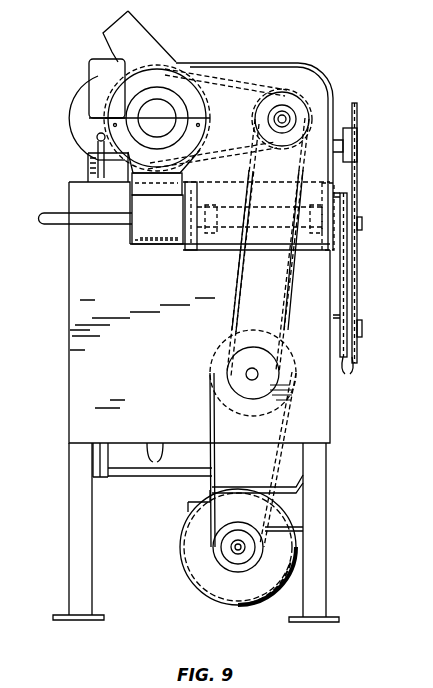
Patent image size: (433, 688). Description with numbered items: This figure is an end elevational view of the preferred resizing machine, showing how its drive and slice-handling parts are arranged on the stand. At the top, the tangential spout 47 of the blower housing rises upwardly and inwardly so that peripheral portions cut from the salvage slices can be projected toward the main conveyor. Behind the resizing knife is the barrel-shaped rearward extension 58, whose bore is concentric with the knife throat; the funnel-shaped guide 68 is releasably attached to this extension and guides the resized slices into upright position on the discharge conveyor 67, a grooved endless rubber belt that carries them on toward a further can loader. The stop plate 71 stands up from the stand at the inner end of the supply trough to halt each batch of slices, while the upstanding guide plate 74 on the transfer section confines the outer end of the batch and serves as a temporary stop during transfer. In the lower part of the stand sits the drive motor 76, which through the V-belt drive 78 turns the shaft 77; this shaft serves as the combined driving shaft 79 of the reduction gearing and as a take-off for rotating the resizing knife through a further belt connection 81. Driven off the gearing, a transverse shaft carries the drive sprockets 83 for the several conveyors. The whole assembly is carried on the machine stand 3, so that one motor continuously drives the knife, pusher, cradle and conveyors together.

The frame 3 is at (327, 512).
The tangential spout 47 is at (148, 27).
The barrel-shaped rearward extension 58 is at (186, 104).
The discharge conveyor 67 is at (158, 198).
The funnel-shaped guide 68 is at (196, 137).
The stop plate 71 is at (108, 79).
The upstanding guide plate 74 is at (70, 121).
The drive motor 76 is at (180, 545).
The shaft 77 is at (54, 212).
The V-belt drive 78 is at (214, 467).
The driving shaft 79 is at (258, 370).
The belt 81 is at (240, 292).
The drive sprockets 83 is at (348, 248).